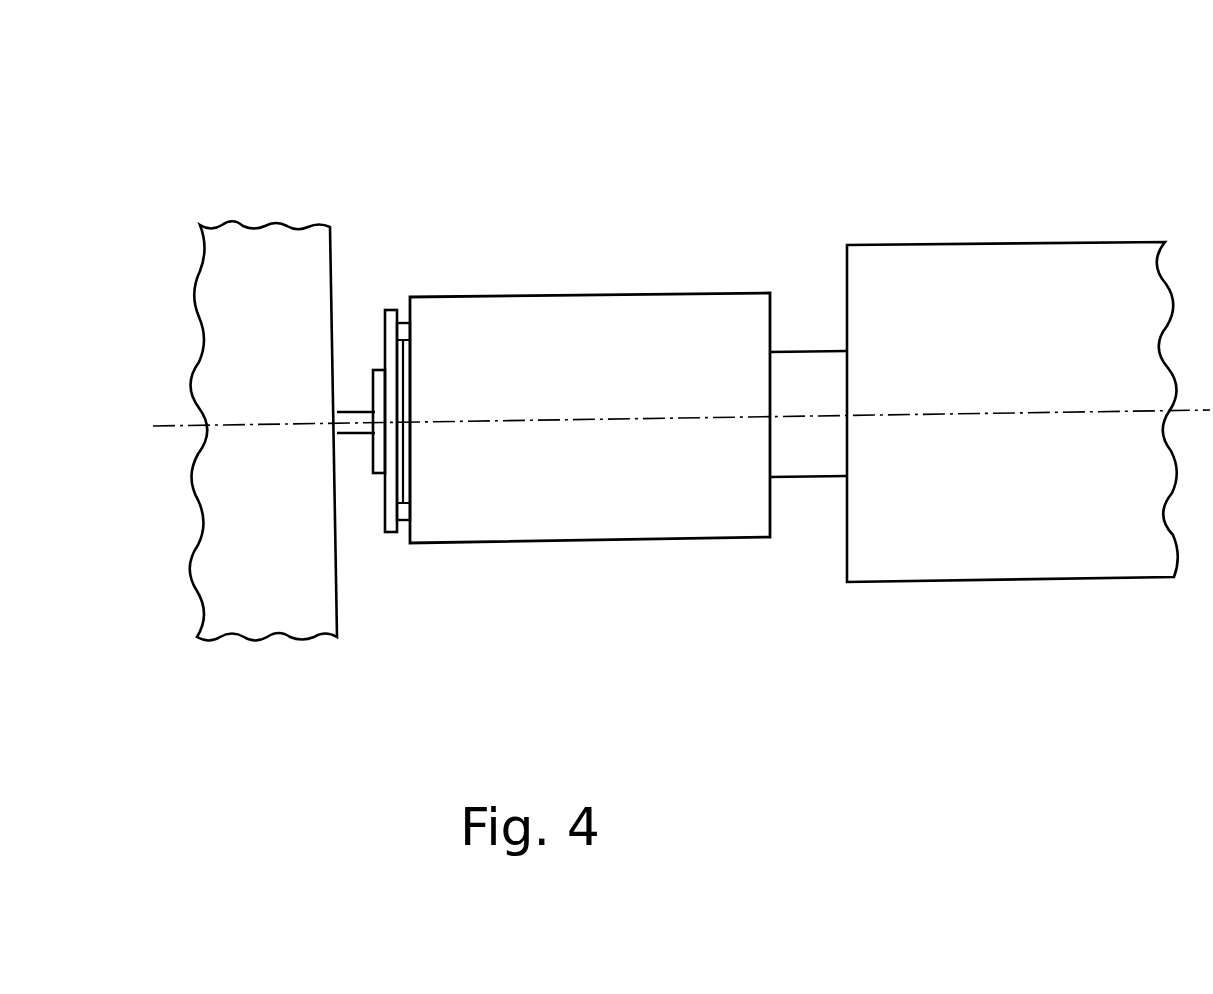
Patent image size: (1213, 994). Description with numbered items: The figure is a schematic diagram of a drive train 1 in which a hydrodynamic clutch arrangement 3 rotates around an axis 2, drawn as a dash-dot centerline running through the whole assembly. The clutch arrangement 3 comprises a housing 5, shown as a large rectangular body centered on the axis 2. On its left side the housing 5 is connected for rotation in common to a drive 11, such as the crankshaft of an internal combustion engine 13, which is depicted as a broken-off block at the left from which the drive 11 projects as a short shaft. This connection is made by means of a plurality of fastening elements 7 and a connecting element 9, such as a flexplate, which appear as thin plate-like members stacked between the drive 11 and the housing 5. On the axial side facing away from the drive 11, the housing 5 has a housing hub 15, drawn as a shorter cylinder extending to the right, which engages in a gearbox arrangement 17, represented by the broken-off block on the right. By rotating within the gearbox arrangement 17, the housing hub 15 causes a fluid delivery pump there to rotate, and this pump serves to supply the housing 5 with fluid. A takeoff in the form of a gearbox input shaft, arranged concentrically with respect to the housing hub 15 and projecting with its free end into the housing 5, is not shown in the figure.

The drive train 1 is at (617, 108).
The axis 2 is at (172, 428).
The hydrodynamic clutch arrangement 3 is at (689, 323).
The housing 5 is at (585, 320).
The fastening elements 7 is at (397, 323).
The connecting element 9 is at (386, 328).
The drive 11 is at (353, 436).
The internal combustion engine 13 is at (262, 255).
The housing hub 15 is at (803, 377).
The gearbox arrangement 17 is at (1032, 325).